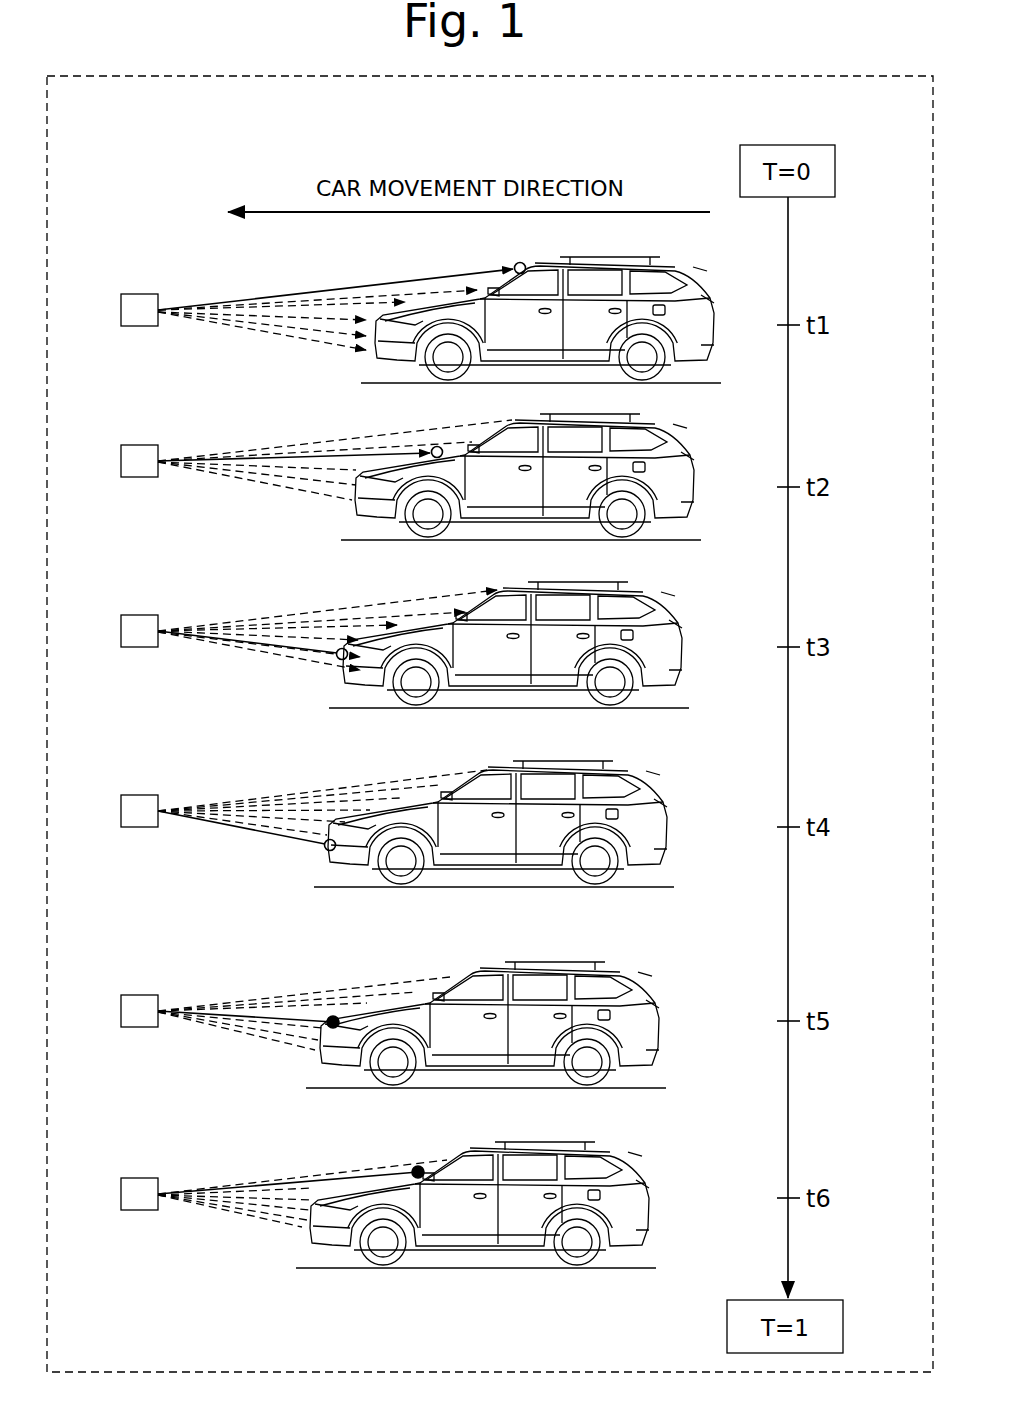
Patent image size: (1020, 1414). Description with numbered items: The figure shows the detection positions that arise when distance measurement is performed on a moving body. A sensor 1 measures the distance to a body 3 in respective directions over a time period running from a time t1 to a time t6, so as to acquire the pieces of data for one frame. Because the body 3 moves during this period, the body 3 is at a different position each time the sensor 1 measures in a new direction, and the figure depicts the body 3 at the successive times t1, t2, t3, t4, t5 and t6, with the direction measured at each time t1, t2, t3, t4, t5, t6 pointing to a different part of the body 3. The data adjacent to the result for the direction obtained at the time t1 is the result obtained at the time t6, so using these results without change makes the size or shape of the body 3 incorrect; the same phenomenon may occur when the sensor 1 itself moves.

The sensor 1 is at (135, 294).
The body 3 is at (710, 297).
The time t1 is at (520, 253).
The time t2 is at (424, 428).
The time t3 is at (333, 678).
The time t4 is at (317, 859).
The time t5 is at (328, 995).
The time t6 is at (410, 1153).